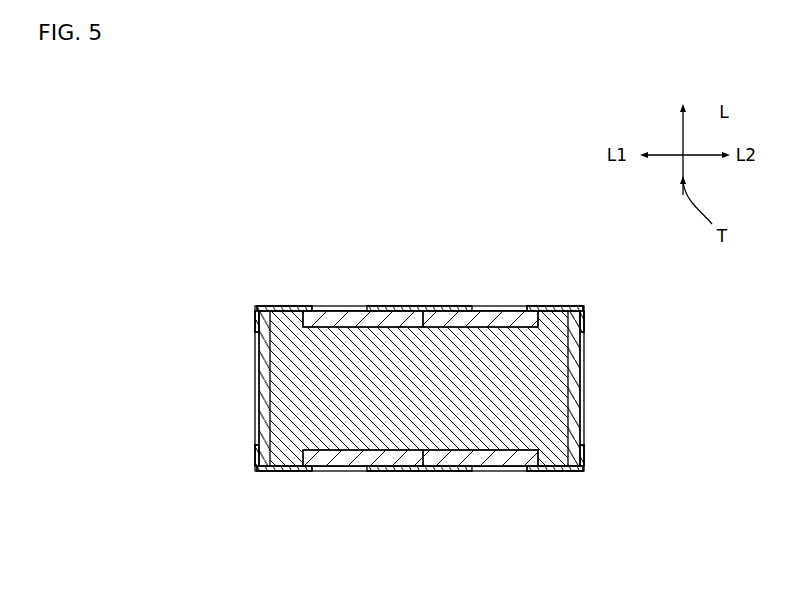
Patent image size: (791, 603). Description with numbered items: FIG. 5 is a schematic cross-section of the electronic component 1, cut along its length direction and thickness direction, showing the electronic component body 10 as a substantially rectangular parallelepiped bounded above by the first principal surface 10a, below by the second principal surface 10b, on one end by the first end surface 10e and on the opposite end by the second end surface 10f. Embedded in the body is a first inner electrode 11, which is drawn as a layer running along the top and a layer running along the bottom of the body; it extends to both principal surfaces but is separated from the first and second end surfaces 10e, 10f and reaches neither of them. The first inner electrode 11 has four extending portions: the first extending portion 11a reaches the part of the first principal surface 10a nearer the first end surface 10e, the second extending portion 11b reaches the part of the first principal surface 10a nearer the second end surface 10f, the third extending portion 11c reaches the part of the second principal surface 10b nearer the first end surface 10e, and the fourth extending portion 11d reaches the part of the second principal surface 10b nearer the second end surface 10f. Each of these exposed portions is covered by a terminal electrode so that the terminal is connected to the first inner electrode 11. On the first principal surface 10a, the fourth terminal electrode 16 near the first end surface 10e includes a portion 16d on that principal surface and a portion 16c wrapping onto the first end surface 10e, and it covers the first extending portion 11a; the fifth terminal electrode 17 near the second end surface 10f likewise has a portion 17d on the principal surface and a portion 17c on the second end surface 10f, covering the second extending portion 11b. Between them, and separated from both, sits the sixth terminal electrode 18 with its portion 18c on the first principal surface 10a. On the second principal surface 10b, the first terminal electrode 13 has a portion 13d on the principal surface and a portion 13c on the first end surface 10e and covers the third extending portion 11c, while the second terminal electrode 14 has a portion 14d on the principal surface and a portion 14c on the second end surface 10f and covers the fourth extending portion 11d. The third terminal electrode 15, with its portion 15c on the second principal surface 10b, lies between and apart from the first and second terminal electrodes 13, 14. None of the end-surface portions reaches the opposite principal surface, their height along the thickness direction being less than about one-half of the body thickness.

The electronic component 1 is at (474, 283).
The electronic component body 10 is at (322, 304).
The first principal surface 10a is at (346, 311).
The second principal surface 10b is at (357, 466).
The first end surface 10e is at (257, 378).
The second end surface 10f is at (580, 375).
The first inner electrode 11 is at (500, 452).
The first extending portion 11a is at (297, 311).
The second extending portion 11b is at (555, 311).
The third extending portion 11c is at (295, 466).
The fourth extending portion 11d is at (553, 466).
The first terminal electrode 13 is at (287, 478).
The portion of first terminal electrode on first end surface 13c is at (255, 455).
The portion of first terminal electrode on second principal surface 13d is at (264, 471).
The second terminal electrode 14 is at (590, 470).
The portion of second terminal electrode on second end surface 14c is at (584, 449).
The portion of second terminal electrode on second principal surface 14d is at (541, 471).
The third terminal electrode 15 is at (428, 478).
The portion of third terminal electrode on second principal surface 15c is at (405, 471).
The fourth terminal electrode 16 is at (277, 299).
The portion of fourth terminal electrode on first end surface 16c is at (255, 322).
The portion of fourth terminal electrode on first principal surface 16d is at (268, 306).
The fifth terminal electrode 17 is at (578, 302).
The portion of fifth terminal electrode on second end surface 17c is at (584, 318).
The portion of fifth terminal electrode on first principal surface 17d is at (547, 306).
The sixth terminal electrode 18 is at (419, 299).
The portion of sixth terminal electrode on first principal surface 18c is at (385, 306).